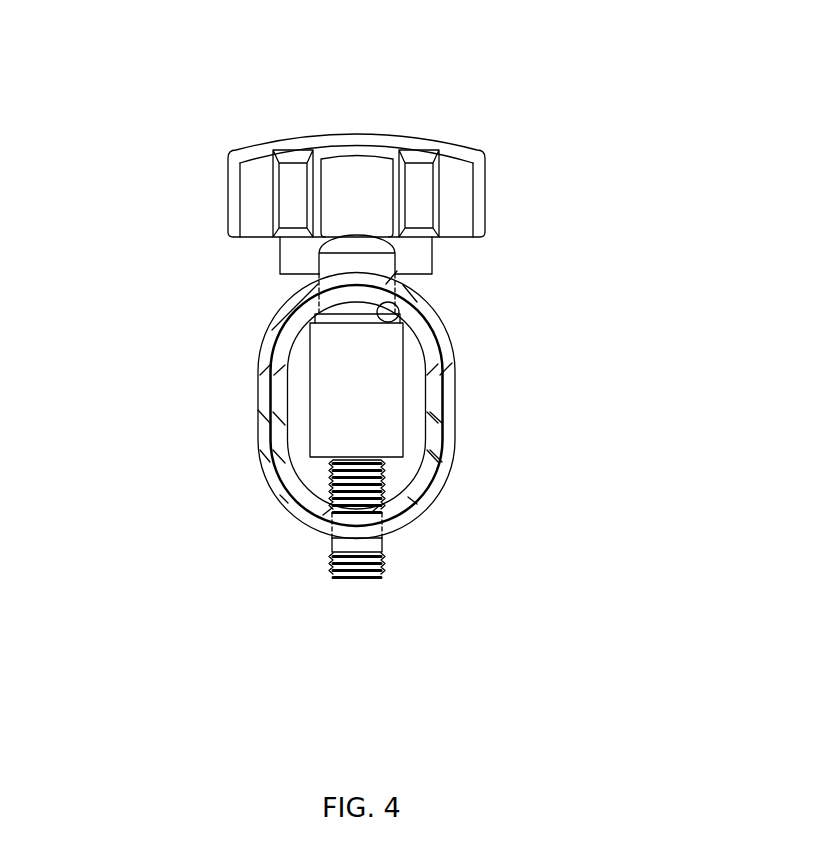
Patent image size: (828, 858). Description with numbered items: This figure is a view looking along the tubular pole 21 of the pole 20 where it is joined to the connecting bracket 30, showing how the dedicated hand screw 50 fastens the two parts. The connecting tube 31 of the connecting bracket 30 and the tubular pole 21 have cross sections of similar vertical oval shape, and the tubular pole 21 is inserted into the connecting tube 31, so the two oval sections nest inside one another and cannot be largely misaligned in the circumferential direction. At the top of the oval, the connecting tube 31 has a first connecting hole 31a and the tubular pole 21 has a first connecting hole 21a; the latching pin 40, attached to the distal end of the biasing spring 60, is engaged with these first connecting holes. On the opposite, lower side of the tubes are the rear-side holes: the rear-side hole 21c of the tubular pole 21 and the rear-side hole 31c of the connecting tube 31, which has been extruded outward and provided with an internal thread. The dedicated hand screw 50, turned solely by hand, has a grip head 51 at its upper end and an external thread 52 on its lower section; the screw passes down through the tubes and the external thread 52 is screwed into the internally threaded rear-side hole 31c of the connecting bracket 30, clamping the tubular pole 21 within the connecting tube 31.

The dedicated hand screw 50 is at (178, 188).
The grip head 51 is at (403, 138).
The latching pin 40 is at (295, 254).
The first connecting hole 31a is at (398, 268).
The connecting tube 31 is at (455, 423).
The connecting bracket 30 is at (468, 406).
The tubular pole 21 is at (435, 393).
The pole 20 is at (475, 408).
The first connecting hole 21a is at (399, 321).
The biasing spring 60 is at (328, 390).
The rear-side hole 21c is at (330, 517).
The rear-side hole 31c is at (333, 540).
The external thread 52 is at (350, 580).